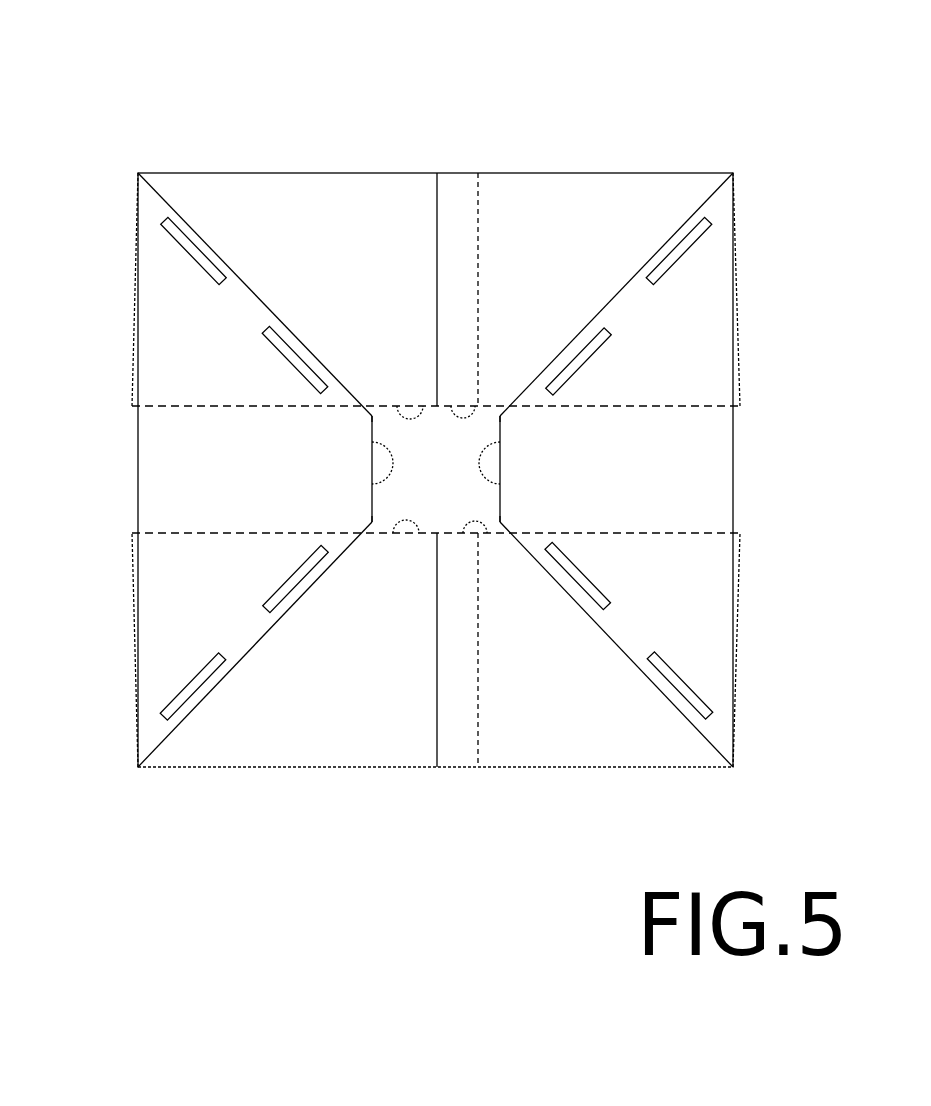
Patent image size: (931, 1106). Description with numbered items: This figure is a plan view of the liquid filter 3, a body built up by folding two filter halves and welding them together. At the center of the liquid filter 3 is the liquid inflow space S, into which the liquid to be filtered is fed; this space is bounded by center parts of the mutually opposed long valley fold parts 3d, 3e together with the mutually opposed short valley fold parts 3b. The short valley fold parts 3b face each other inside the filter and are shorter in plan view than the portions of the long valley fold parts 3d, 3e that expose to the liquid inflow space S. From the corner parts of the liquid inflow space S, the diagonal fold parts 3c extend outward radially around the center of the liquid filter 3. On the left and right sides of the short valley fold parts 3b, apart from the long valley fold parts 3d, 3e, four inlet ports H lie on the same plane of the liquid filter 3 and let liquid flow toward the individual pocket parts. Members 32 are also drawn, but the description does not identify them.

The liquid filter 3 is at (205, 142).
The short valley fold parts 3b is at (372, 481).
The diagonal fold parts 3c is at (244, 278).
The long valley fold part 3d is at (413, 537).
The long valley fold part 3e is at (418, 404).
The elastic member 32 is at (190, 247).
The inlet ports H is at (372, 414).
The liquid inflow space S is at (436, 469).